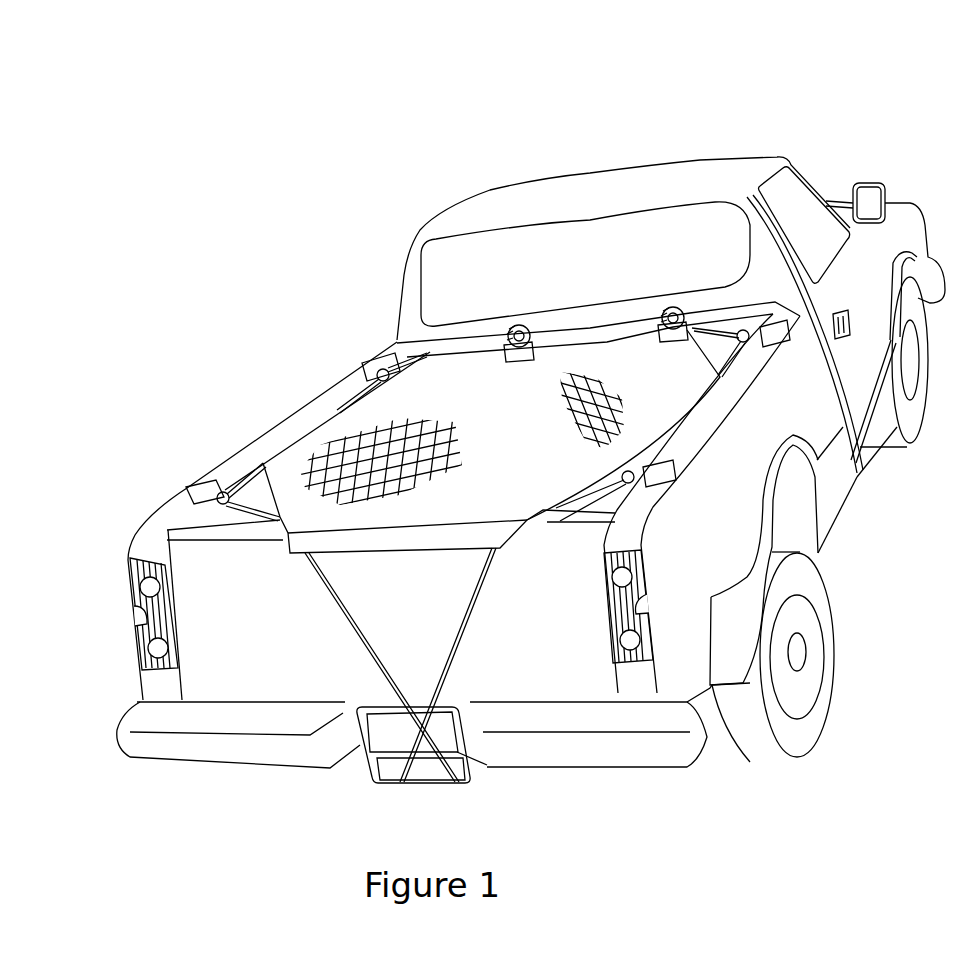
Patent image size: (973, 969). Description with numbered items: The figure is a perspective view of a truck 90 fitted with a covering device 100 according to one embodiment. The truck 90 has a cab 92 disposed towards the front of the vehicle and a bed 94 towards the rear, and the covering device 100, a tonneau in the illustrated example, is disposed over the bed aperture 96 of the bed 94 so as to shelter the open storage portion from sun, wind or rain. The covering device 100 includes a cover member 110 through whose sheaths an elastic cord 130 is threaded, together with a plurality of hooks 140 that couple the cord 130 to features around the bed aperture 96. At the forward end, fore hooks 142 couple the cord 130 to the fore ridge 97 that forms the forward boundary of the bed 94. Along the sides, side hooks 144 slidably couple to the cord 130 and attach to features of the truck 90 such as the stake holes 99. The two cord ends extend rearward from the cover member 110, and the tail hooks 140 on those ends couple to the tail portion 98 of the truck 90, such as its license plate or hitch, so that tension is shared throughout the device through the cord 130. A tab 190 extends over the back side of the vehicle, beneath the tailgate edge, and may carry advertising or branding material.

The truck 90 is at (532, 458).
The cab 92 is at (622, 457).
The bed 94 is at (448, 591).
The bed aperture 96 is at (262, 501).
The fore ridge 97 is at (598, 291).
The tail portion 98 is at (372, 793).
The stake hole 99 is at (650, 498).
The covering device 100 is at (472, 444).
The cover member 110 is at (702, 503).
The cord 130 is at (370, 528).
The hook 140 is at (725, 329).
The fore hook 142 is at (502, 307).
The side hook 144 is at (190, 486).
The tab 190 is at (433, 639).